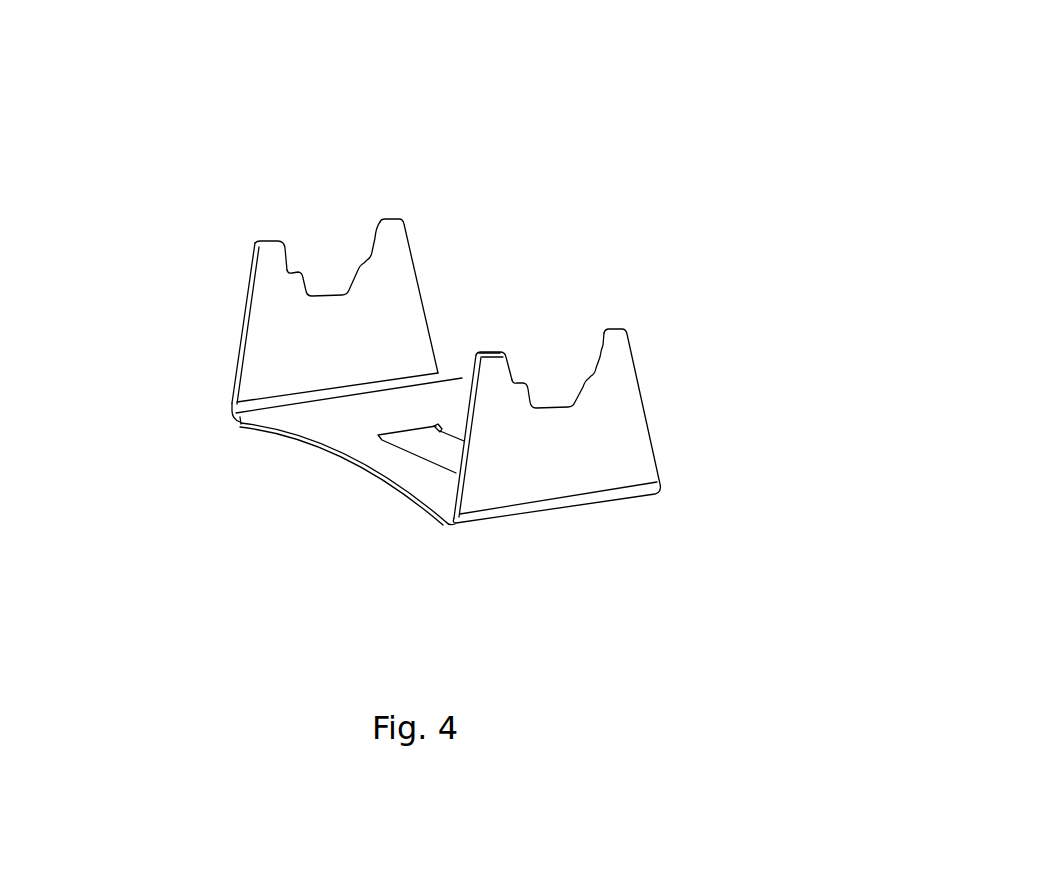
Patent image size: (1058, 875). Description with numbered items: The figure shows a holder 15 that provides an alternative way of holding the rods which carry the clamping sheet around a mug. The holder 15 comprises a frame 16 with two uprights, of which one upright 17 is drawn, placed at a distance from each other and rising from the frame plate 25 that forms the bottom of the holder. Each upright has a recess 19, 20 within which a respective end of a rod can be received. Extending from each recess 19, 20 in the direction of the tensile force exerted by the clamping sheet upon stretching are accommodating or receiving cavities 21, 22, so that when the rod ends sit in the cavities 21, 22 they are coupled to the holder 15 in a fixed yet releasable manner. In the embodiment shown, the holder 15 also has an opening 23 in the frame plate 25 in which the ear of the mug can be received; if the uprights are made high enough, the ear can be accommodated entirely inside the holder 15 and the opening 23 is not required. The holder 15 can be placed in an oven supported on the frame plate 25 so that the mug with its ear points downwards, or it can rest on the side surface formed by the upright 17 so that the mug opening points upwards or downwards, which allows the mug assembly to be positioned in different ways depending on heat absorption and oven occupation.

The holder 15 is at (525, 175).
The frame 16 is at (377, 478).
The upright 17 is at (582, 467).
The recess 19 is at (567, 362).
The recess 20 is at (323, 230).
The receiving cavity 21 is at (283, 270).
The receiving cavity 22 is at (383, 252).
The opening 23 is at (437, 450).
The frame plate 25 is at (318, 427).